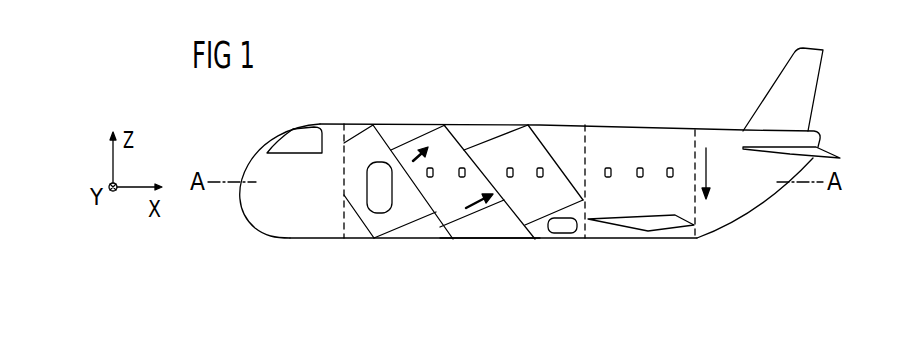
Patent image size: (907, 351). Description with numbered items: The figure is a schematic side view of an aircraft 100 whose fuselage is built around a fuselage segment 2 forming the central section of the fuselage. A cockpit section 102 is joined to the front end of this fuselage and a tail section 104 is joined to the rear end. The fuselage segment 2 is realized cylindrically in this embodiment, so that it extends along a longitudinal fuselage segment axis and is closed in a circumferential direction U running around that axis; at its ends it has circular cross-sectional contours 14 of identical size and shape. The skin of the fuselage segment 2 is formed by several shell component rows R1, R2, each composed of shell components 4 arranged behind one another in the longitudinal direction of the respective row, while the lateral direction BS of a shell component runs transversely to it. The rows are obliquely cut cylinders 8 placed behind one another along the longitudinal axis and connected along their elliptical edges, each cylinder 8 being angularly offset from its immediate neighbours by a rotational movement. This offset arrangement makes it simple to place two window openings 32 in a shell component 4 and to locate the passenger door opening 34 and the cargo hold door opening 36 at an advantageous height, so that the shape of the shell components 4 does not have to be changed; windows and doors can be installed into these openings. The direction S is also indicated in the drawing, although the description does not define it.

The aircraft 100 is at (430, 254).
The cockpit section 102 is at (262, 233).
The tail section 104 is at (755, 207).
The circular cross-sectional contour 14 is at (343, 109).
The obliquely cut cylinder 8 is at (478, 106).
The shell component 4 is at (473, 125).
The fuselage segment 2 is at (487, 239).
The window opening 32 is at (462, 177).
The passenger door opening 34 is at (372, 187).
The cargo hold door opening 36 is at (565, 233).
The shell component row R1 is at (401, 114).
The shell component row R2 is at (506, 115).
The sliding direction S is at (403, 155).
The lateral direction of a shell component BS is at (478, 206).
The circumferential direction U is at (706, 158).